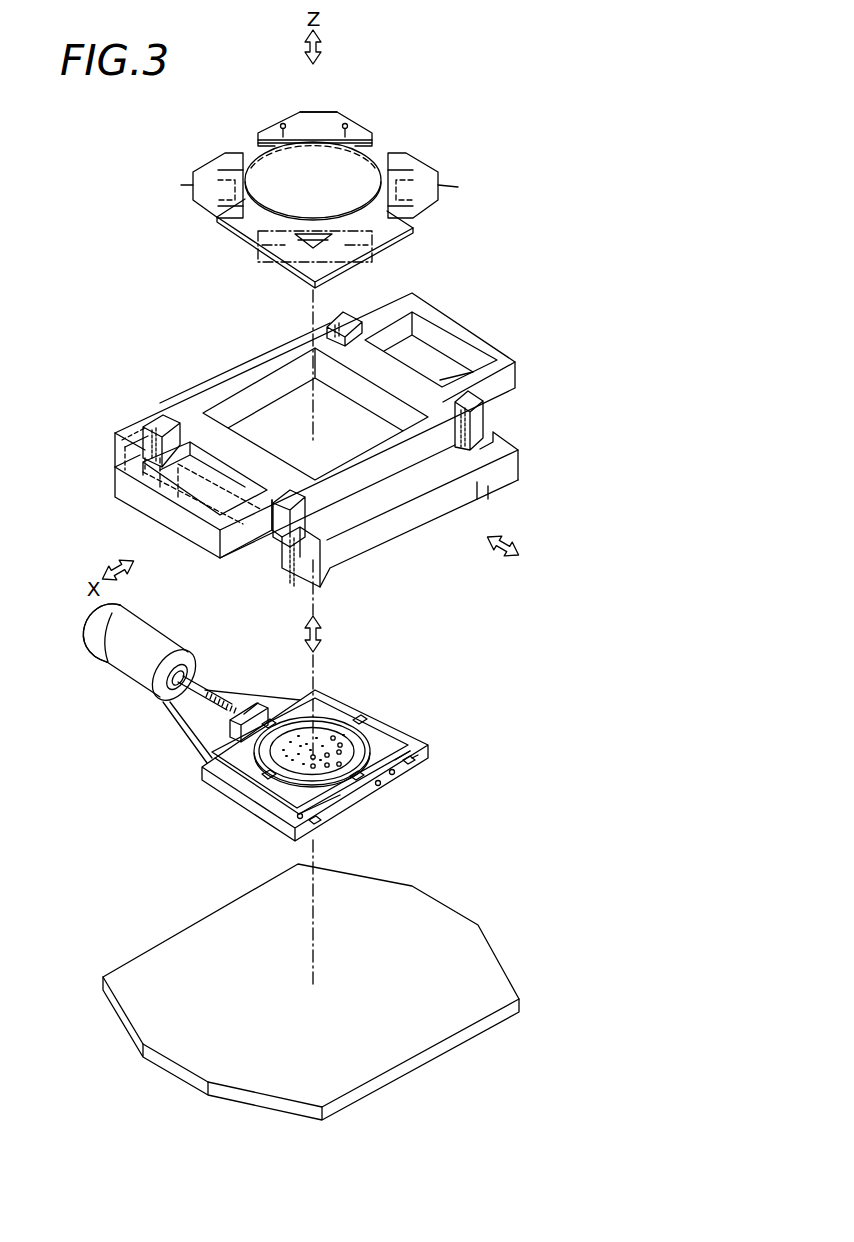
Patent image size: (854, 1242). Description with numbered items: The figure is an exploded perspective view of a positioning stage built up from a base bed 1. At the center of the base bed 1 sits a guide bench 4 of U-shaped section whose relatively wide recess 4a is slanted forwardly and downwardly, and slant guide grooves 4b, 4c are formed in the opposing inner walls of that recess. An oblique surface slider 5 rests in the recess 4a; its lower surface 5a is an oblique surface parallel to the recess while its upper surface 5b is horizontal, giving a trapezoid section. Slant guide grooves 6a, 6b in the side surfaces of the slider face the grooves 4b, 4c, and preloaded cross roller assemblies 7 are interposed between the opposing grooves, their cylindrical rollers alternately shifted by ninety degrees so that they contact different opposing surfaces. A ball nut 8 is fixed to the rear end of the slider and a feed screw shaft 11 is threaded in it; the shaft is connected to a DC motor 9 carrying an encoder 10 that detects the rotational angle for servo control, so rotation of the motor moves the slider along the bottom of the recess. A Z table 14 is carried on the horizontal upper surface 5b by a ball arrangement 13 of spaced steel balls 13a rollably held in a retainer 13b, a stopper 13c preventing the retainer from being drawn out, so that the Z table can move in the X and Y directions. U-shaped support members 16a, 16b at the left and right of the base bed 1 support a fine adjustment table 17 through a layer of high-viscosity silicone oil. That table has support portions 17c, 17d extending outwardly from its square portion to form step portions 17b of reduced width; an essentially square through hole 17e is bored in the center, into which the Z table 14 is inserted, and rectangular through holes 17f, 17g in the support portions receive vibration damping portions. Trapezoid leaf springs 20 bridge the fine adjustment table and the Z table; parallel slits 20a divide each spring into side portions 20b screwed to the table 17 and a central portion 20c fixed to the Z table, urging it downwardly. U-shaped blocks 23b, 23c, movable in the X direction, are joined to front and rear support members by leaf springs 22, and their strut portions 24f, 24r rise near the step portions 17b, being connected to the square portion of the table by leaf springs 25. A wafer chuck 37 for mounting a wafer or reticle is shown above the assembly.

The base bed 1 is at (455, 922).
The guide bench 4 is at (430, 760).
The recess 4a is at (380, 786).
The slant guide groove 4b is at (310, 824).
The slant guide groove 4c is at (412, 764).
The oblique surface slider 5 is at (340, 805).
The lower surface 5a is at (355, 795).
The upper surface 5b is at (405, 740).
The slant guide groove 6a is at (310, 826).
The slant guide groove 6b is at (395, 775).
The cross roller assembly 7 is at (418, 764).
The ball nut 8 is at (264, 706).
The DC motor 9 is at (160, 642).
The encoder 10 is at (125, 612).
The feed screw shaft 11 is at (228, 695).
The wafer chuck assembly 13 is at (395, 668).
The steel balls 13a is at (360, 725).
The retainer 13b is at (335, 740).
The stopper 13c is at (335, 700).
The Z table 14 is at (405, 232).
The U-shaped support member 16a is at (420, 512).
The U-shaped support member 16b is at (218, 375).
The fine adjustment table 17 is at (385, 488).
The step portions 17b is at (338, 322).
The support portion 17c is at (205, 536).
The support portion 17d is at (455, 330).
The through hole 17e is at (268, 386).
The through hole 17f is at (140, 510).
The through hole 17g is at (462, 357).
The leaf springs 20 is at (330, 114).
The parallel slits 20a is at (280, 128).
The side portions 20b is at (262, 138).
The central portion 20c is at (308, 128).
The leaf springs 22 is at (125, 452).
The U-shaped block 23b is at (500, 442).
The notch 23c is at (270, 530).
The strut portion 24f is at (478, 410).
The strut portion 24r is at (356, 320).
The leaf springs 25 is at (330, 330).
The wafer chuck 37 is at (268, 204).